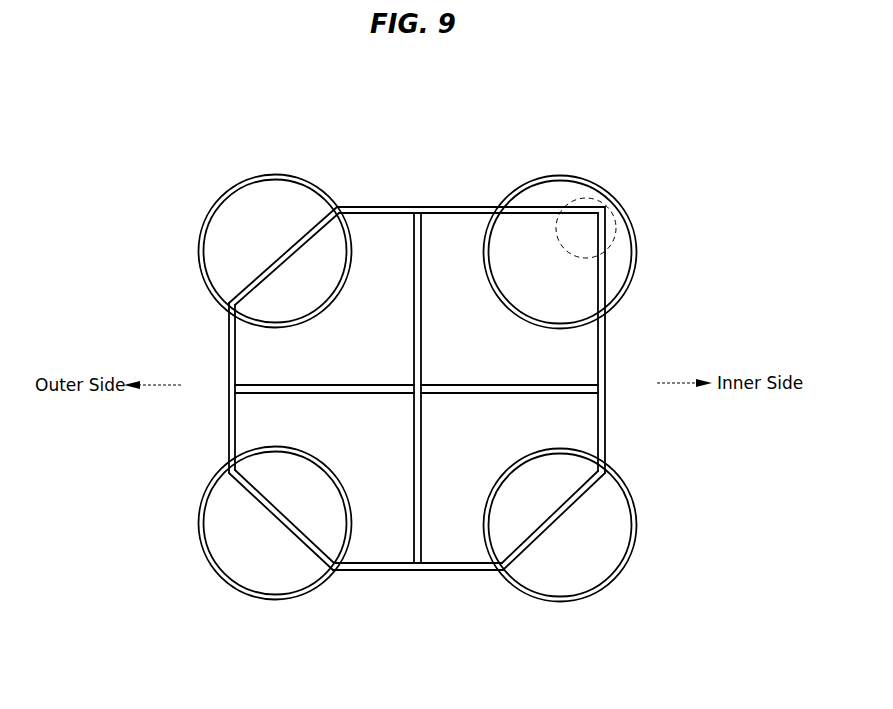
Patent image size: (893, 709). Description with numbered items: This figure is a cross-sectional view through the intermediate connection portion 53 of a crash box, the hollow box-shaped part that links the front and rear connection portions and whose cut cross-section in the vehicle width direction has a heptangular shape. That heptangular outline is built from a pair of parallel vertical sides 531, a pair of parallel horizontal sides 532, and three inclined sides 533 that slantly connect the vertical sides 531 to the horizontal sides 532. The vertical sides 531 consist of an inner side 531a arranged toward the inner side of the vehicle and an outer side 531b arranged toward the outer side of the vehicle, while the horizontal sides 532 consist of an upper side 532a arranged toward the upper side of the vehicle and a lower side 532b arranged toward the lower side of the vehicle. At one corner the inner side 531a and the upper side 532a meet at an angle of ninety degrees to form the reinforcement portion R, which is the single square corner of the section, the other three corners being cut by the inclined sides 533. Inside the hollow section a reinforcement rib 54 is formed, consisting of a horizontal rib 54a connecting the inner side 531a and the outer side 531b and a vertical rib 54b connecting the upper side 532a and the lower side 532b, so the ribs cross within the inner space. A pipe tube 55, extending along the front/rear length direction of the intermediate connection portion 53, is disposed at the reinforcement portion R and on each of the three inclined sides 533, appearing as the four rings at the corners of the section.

The intermediate connection portion 53 is at (343, 201).
The vertical sides 531 is at (467, 668).
The inner side 531a is at (598, 432).
The outer side 531b is at (235, 433).
The horizontal sides 532 is at (372, 139).
The upper side 532a is at (452, 207).
The lower side 532b is at (377, 563).
The inclined sides 533 is at (272, 262).
The reinforcement rib 54 is at (688, 352).
The horizontal rib 54a is at (505, 387).
The vertical rib 54b is at (605, 313).
The pipe tube 55 is at (243, 180).
The reinforcement portion R is at (637, 248).